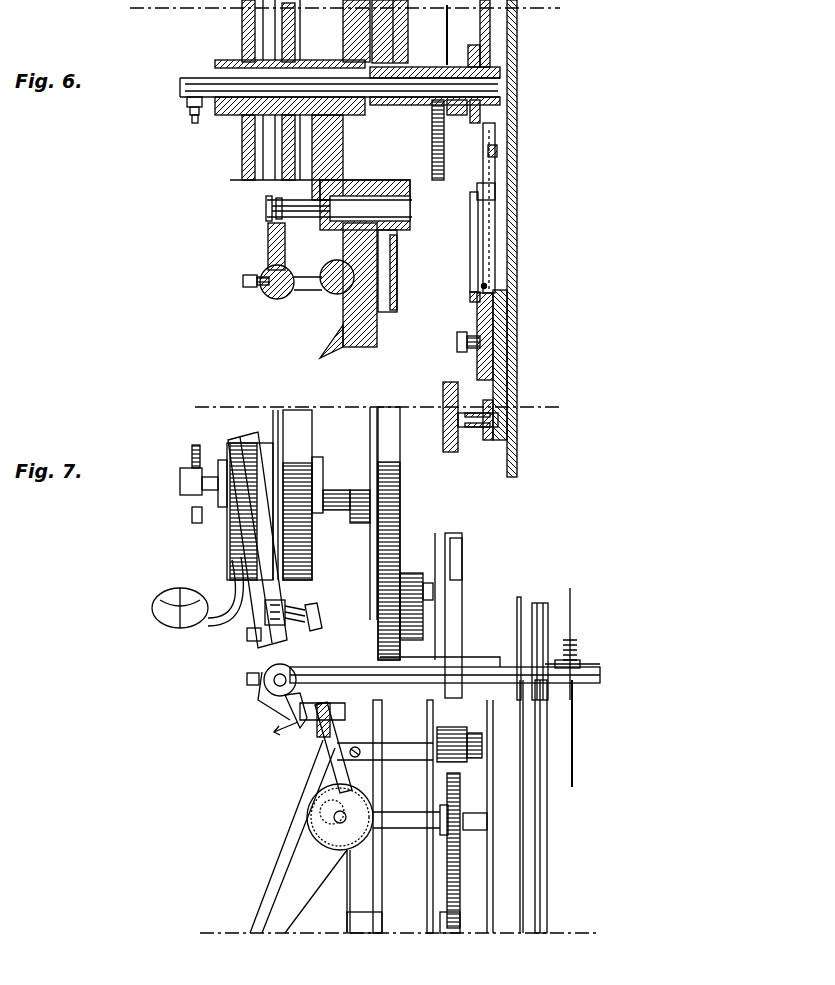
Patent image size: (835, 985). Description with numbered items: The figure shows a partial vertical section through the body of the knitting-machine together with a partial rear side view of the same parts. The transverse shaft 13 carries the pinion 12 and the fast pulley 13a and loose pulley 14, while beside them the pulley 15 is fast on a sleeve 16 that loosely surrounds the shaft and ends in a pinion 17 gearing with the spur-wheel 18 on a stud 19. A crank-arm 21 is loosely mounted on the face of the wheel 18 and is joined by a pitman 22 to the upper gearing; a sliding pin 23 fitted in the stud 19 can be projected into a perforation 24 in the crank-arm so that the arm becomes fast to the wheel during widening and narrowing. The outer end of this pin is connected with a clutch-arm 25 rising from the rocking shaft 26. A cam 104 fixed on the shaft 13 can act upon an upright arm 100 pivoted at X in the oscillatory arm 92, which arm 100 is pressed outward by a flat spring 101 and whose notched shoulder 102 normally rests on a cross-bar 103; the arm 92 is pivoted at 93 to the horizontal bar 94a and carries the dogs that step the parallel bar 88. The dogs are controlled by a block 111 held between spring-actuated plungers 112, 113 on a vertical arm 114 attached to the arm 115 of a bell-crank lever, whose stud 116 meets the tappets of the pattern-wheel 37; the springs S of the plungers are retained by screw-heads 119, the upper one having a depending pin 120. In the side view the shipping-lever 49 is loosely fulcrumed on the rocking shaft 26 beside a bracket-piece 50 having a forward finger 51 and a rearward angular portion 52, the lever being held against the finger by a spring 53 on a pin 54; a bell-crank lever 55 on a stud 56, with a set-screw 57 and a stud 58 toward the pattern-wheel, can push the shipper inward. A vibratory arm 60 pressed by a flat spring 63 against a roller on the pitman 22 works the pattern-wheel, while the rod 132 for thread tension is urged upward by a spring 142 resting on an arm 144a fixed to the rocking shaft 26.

In FIG. 6, the fast pulley 13a is at (237, 33).
In FIG. 7, the fast pulley 13a is at (218, 439).
In FIG. 6, the shaft 13 is at (180, 87).
In FIG. 6, the loose pulley 14 is at (262, 147).
In FIG. 7, the loose pulley 14 is at (268, 415).
In FIG. 6, the pulley 15 is at (245, 187).
In FIG. 7, the pulley 15 is at (300, 425).
In FIG. 6, the sleeve 16 is at (330, 108).
In FIG. 6, the pinion 17 is at (375, 60).
In FIG. 7, the pinion 17 is at (400, 492).
In FIG. 6, the spur-wheel 18 is at (390, 274).
In FIG. 7, the spur-wheel 18 is at (400, 522).
In FIG. 6, the stud 19 is at (420, 222).
In FIG. 6, the pinion 12 is at (440, 140).
In FIG. 6, the crank-arm 21 is at (455, 197).
In FIG. 6, the pitman 22 is at (447, 27).
In FIG. 7, the pitman 22 is at (450, 537).
In FIG. 6, the sliding pin 23 is at (267, 210).
In FIG. 6, the perforation 24 is at (420, 206).
In FIG. 6, the clutch-arm 25 is at (268, 247).
In FIG. 6, the rocking shaft 26 is at (272, 294).
In FIG. 7, the rocking shaft 26 is at (278, 682).
In FIG. 6, the pattern-wheel 37 is at (443, 392).
In FIG. 7, the pattern-wheel 37 is at (450, 870).
In FIG. 6, the parallel bar 88 is at (518, 79).
In FIG. 6, the oscillatory arm 92 is at (520, 322).
In FIG. 6, the pivot 93 is at (478, 326).
In FIG. 6, the horizontal bar 94a is at (440, 371).
In FIG. 6, the upright arm 100 is at (490, 242).
In FIG. 6, the flat spring 101 is at (495, 230).
In FIG. 6, the shoulder 102 is at (500, 143).
In FIG. 6, the cross-bar 103 is at (520, 150).
In FIG. 6, the cam 104 is at (490, 55).
In FIG. 6, the block 111 is at (520, 352).
In FIG. 6, the spring-actuated plunger 112 is at (520, 336).
In FIG. 6, the spring-actuated plunger 113 is at (520, 390).
In FIG. 6, the vertical arm 114 is at (520, 412).
In FIG. 6, the arm of bell-crank lever 115 is at (520, 460).
In FIG. 6, the stud 116 is at (462, 425).
In FIG. 6, the screw-head 119 is at (520, 286).
In FIG. 6, the depending pin 120 is at (470, 305).
In FIG. 7, the vertically-movable rod 132 is at (575, 758).
In FIG. 7, the spring 142 is at (577, 650).
In FIG. 7, the arm 144a is at (590, 680).
In FIG. 7, the shipping-lever 49 is at (258, 533).
In FIG. 7, the bracket-piece 50 is at (272, 662).
In FIG. 7, the lug or finger 51 is at (247, 634).
In FIG. 7, the angular portion 52 is at (316, 630).
In FIG. 7, the spring 53 is at (295, 600).
In FIG. 7, the pin 54 is at (312, 611).
In FIG. 7, the bell-crank lever 55 is at (325, 765).
In FIG. 7, the stud 56 is at (336, 820).
In FIG. 7, the set-screw 57 is at (310, 700).
In FIG. 7, the stud 58 is at (440, 830).
In FIG. 7, the vibratory arm 60 is at (462, 562).
In FIG. 7, the flat spring 63 is at (462, 590).
In FIG. 6, the pivot X is at (520, 285).
In FIG. 6, the spring S is at (535, 346).